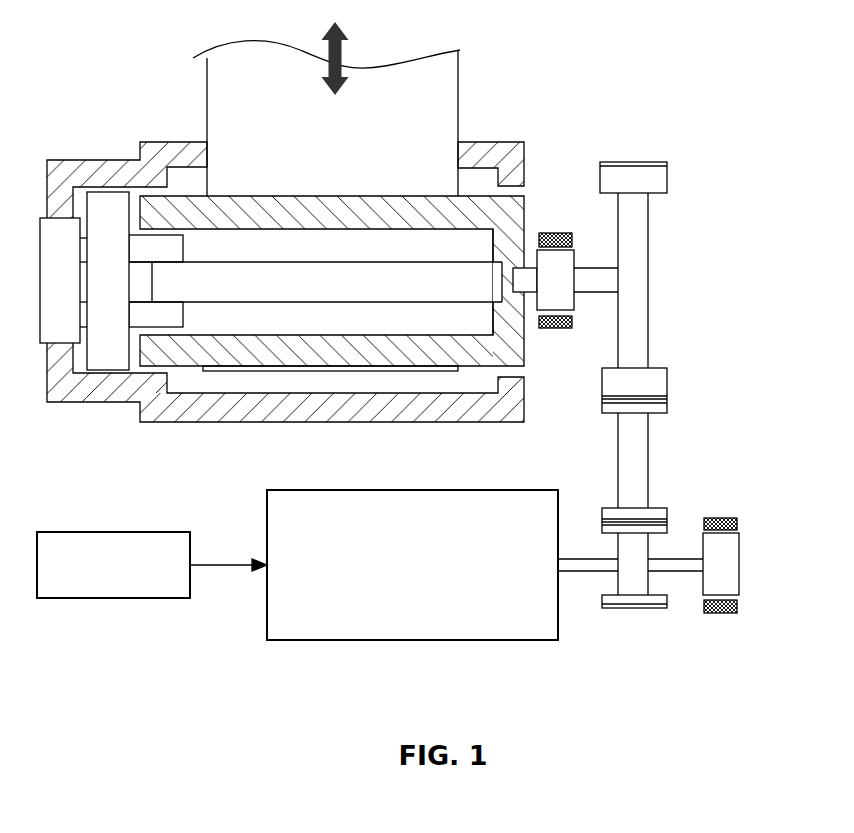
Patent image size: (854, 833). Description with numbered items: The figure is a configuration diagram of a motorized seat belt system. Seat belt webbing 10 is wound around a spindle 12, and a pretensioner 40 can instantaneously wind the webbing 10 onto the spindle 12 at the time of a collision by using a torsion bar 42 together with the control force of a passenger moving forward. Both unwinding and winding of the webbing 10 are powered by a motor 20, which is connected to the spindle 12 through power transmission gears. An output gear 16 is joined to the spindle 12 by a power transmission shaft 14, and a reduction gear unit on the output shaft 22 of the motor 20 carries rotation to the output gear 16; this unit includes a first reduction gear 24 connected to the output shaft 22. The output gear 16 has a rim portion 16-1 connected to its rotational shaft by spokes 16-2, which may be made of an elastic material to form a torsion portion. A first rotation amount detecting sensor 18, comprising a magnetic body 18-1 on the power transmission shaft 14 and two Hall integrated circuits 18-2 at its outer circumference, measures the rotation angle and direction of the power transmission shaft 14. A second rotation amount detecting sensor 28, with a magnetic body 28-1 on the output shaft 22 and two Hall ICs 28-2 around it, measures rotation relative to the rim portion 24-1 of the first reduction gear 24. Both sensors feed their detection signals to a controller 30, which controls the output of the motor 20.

The seat belt webbing 10 is at (443, 82).
The spindle 12 is at (470, 203).
The power transmission shaft 14 is at (593, 288).
The output gear 16 is at (687, 378).
The rim portion 16-1 is at (674, 382).
The spokes 16-2 is at (640, 278).
The first rotation amount detecting sensor 18 is at (606, 272).
The magnetic body 18-1 is at (567, 262).
The Hall integrated circuits 18-2 is at (588, 251).
The motor 20 is at (409, 640).
The output shaft 22 is at (577, 560).
The first reduction gear 24 is at (634, 603).
The rim portion 24-1 is at (619, 607).
The second rotation amount detecting sensor 28 is at (768, 561).
The magnetic body 28-1 is at (735, 563).
The Hall ICs 28-2 is at (750, 523).
The controller 30 is at (125, 598).
The pretensioner 40 is at (103, 360).
The torsion bar 42 is at (197, 287).